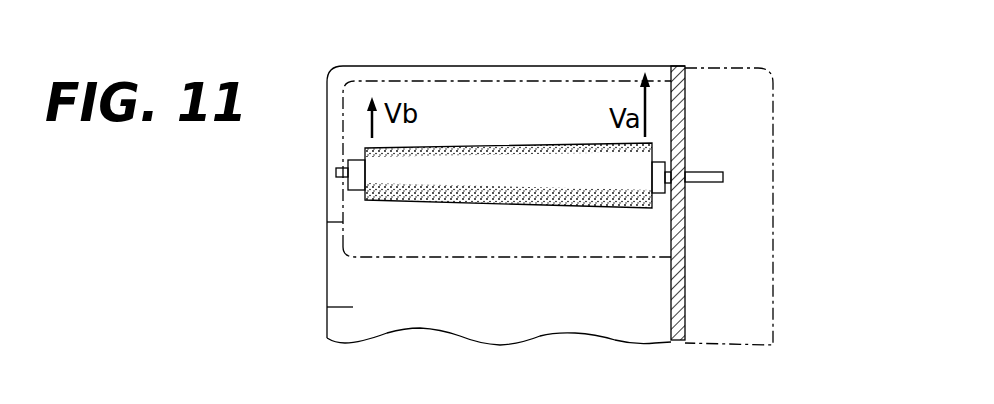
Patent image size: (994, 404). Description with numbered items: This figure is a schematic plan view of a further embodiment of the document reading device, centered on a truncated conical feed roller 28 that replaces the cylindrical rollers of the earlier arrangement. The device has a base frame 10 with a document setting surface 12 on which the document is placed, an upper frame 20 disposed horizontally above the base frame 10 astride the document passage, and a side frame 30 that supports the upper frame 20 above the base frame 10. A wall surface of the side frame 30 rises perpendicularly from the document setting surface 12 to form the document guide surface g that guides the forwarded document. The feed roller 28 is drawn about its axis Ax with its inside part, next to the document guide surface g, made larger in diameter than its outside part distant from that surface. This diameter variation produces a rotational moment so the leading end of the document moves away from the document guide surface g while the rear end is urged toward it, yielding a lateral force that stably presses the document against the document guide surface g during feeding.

The base frame 10 is at (327, 275).
The document setting surface 12 is at (327, 307).
The upper frame 20 is at (327, 222).
The truncated conical feed roller 28 is at (460, 147).
The side frame 30 is at (725, 68).
The roller axis shaft Ax is at (336, 174).
The document guide surface g is at (671, 295).